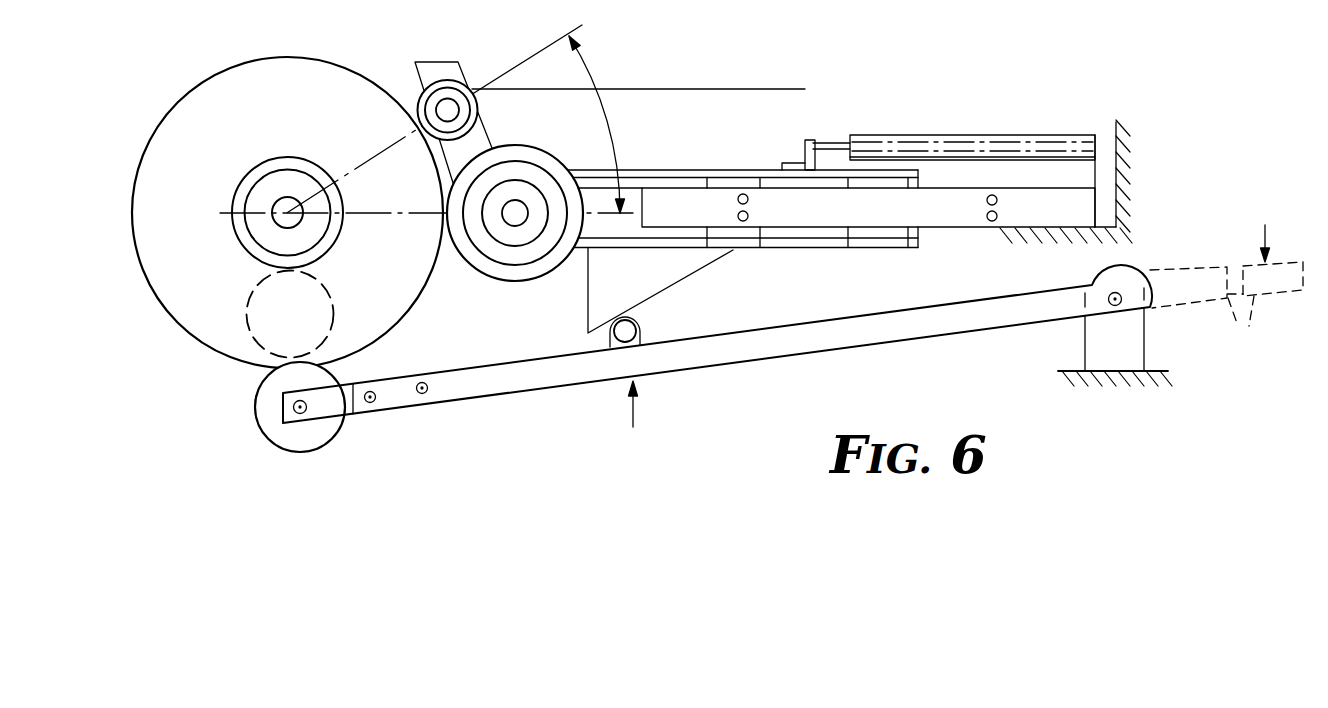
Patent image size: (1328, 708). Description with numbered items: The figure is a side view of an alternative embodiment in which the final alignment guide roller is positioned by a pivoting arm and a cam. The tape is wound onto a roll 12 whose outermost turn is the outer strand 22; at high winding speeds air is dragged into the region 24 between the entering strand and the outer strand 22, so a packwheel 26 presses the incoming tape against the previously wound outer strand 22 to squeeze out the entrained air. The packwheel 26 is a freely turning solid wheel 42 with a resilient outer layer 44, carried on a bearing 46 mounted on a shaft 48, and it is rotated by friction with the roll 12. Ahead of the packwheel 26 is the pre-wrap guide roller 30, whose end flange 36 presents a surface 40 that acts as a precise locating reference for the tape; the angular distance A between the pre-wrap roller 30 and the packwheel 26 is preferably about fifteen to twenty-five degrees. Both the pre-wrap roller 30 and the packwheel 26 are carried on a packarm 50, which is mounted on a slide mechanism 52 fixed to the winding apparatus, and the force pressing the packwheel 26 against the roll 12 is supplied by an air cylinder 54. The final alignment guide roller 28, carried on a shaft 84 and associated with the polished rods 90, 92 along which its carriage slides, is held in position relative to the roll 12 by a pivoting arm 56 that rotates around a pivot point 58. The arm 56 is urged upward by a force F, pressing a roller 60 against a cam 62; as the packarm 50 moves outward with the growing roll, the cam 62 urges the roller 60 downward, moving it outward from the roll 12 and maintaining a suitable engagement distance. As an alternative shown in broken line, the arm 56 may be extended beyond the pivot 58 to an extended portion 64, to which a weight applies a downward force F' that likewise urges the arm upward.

The roll 12 is at (207, 361).
The outer strand 22 is at (322, 58).
The region 24 is at (425, 127).
The packwheel 26 is at (554, 143).
The flanged guide roller 28 is at (267, 440).
The pre-wrap guide roller 30 is at (472, 85).
The end flange 36 is at (422, 97).
The surface 40 is at (446, 82).
The solid wheel 42 is at (522, 257).
The resilient outer layer 44 is at (503, 272).
The bearing 46 is at (535, 230).
The shaft 48 is at (510, 222).
The packarm 50 is at (867, 252).
The slide mechanism 52 is at (967, 223).
The air cylinder 54 is at (998, 143).
The pivoting arm 56 is at (899, 342).
The pivot point 58 is at (1122, 296).
The roller 60 is at (641, 329).
The cam 62 is at (698, 272).
The extended portion 64 is at (1226, 308).
The shaft 84 is at (312, 411).
The rod 90 is at (373, 403).
The rod 92 is at (424, 394).
The angular distance A is at (594, 70).
The force F is at (649, 406).
The force F' is at (1284, 235).